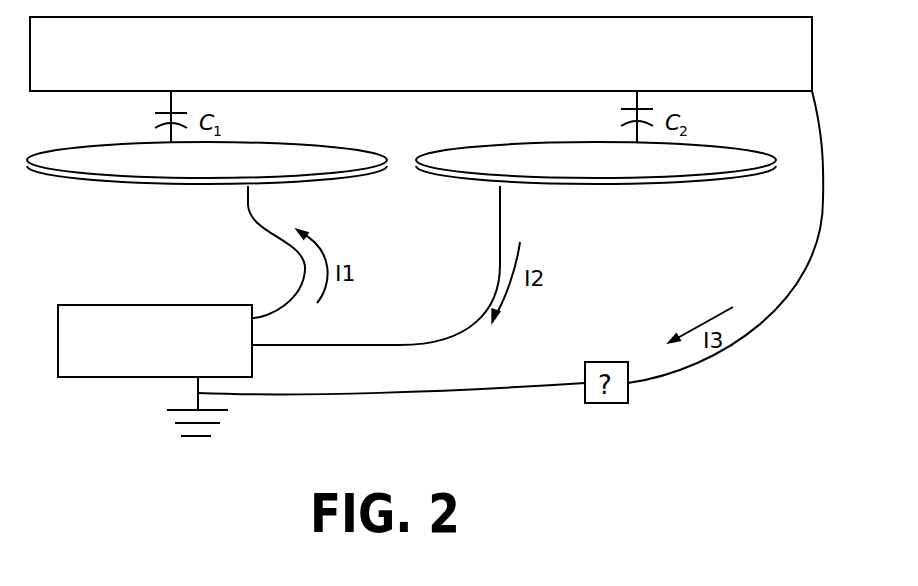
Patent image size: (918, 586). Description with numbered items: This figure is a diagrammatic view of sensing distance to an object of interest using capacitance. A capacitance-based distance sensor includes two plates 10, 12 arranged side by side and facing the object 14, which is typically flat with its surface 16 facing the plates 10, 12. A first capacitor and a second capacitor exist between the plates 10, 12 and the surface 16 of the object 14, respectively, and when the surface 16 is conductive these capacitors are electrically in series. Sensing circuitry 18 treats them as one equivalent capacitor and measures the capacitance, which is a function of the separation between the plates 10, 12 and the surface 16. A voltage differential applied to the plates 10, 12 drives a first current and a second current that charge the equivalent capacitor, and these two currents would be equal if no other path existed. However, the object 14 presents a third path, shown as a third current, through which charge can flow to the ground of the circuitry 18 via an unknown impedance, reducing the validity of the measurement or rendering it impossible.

The plate 10 is at (305, 183).
The plate 12 is at (696, 183).
The object 14 is at (656, 66).
The surface 16 is at (372, 91).
The sensing circuitry 18 is at (167, 365).